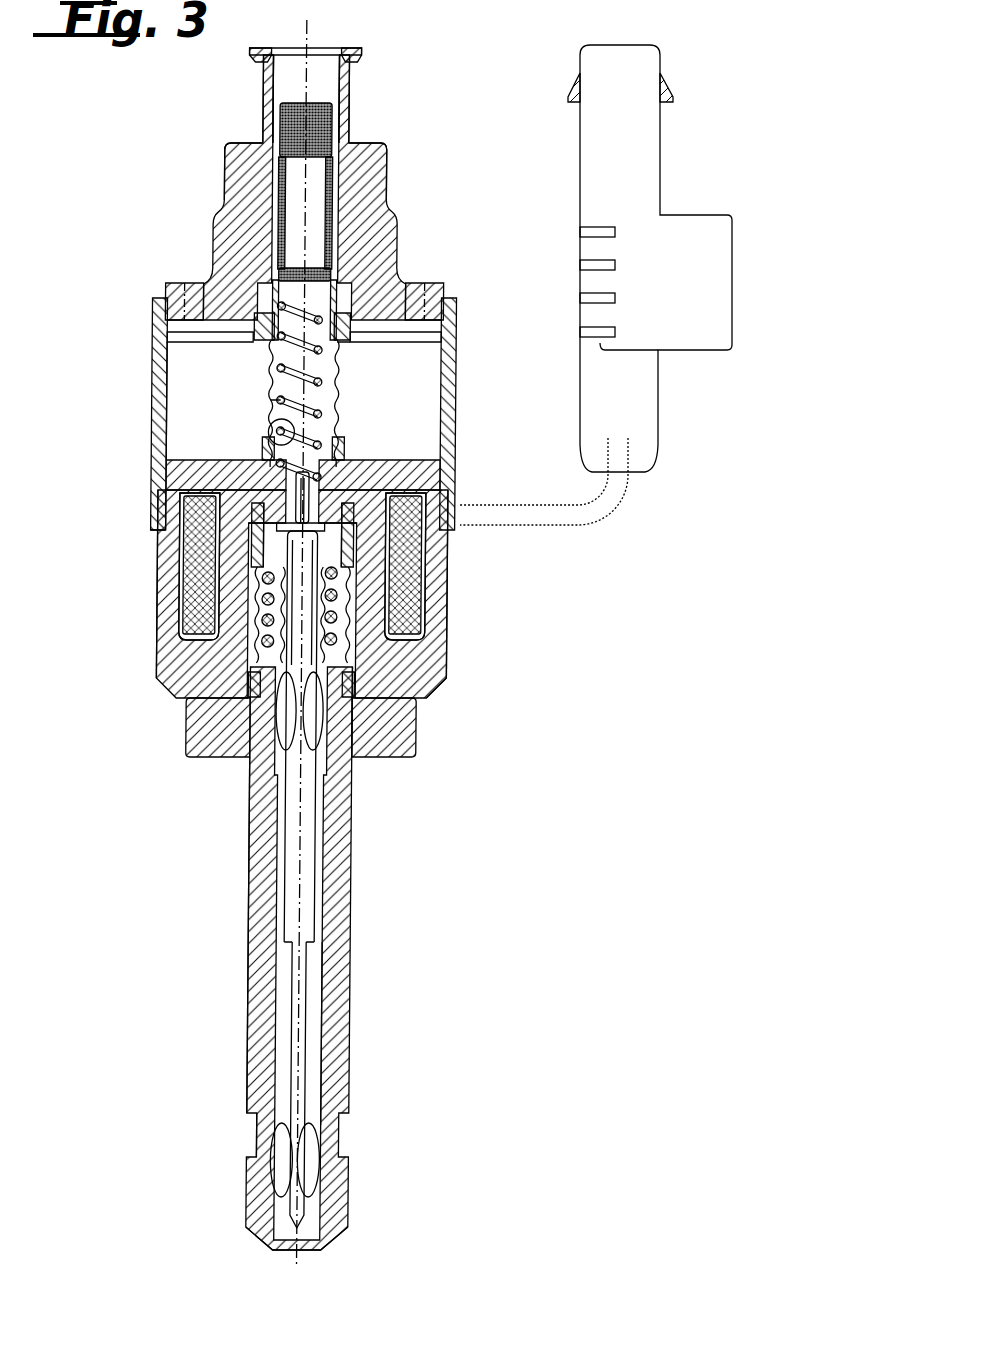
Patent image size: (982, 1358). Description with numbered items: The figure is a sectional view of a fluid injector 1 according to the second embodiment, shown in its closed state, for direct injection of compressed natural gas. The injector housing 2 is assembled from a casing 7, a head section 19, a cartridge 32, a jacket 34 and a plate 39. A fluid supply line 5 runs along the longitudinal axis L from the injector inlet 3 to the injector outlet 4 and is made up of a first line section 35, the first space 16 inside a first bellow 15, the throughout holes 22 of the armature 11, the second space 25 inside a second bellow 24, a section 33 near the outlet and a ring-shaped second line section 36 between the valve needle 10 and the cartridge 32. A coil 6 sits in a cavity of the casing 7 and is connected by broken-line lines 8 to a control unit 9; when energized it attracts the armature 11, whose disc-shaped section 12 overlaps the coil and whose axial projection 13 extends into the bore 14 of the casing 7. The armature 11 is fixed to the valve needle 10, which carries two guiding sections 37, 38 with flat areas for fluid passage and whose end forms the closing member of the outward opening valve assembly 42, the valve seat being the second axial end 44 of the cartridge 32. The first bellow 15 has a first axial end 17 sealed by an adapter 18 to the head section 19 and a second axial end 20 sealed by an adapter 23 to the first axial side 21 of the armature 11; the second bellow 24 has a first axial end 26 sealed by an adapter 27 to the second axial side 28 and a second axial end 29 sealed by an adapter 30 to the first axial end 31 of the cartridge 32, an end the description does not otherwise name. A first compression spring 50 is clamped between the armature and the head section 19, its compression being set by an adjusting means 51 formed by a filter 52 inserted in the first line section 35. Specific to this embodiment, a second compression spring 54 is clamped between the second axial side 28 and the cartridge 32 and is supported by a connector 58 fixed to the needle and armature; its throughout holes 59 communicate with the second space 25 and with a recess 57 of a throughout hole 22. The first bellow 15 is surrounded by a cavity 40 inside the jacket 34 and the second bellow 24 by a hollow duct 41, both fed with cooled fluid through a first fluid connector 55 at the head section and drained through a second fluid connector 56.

The fluid injector 1 is at (112, 162).
The injector housing 2 is at (352, 252).
The injector inlet 3 is at (351, 55).
The injector outlet 4 is at (332, 1235).
The fluid supply line 5 is at (366, 333).
The coil 6 is at (450, 665).
The casing 7 is at (443, 623).
The lines 8 is at (578, 510).
The control unit 9 is at (640, 400).
The valve needle 10 is at (312, 820).
The armature 11 is at (449, 478).
The disc-shaped section 12 is at (189, 472).
The axial projection 13 is at (182, 518).
The bore 14 is at (410, 590).
The first bellow 15 is at (343, 377).
The first space 16 is at (273, 378).
The first axial end 17 is at (443, 355).
The adapter 18 is at (265, 365).
The head section 19 is at (362, 188).
The second axial end 20 is at (278, 408).
The first axial side 21 is at (267, 455).
The throughout holes 22 is at (288, 468).
The adapter 23 is at (344, 428).
The second bellow 24 is at (268, 675).
The second space 25 is at (263, 655).
The first axial end 26 is at (259, 508).
The adapter 27 is at (449, 487).
The second axial side 28 is at (169, 492).
The second axial end 29 is at (350, 915).
The adapter 30 is at (418, 742).
The flow passage 31 is at (274, 722).
The cartridge 32 is at (267, 1075).
The section 33 is at (324, 1075).
The jacket 34 is at (161, 418).
The first line section 35 is at (332, 85).
The second line section 36 is at (288, 985).
The guiding section 37 is at (259, 800).
The guiding section 38 is at (301, 1140).
The plate 39 is at (218, 742).
The cavity 40 is at (287, 401).
The hollow duct 41 is at (195, 615).
The valve assembly 42 is at (350, 1247).
The second axial end 44 is at (256, 1228).
The first compression spring 50 is at (324, 315).
The adjusting means 51 is at (274, 185).
The filter 52 is at (274, 185).
The second compression spring 54 is at (256, 698).
The first fluid connector 55 is at (180, 292).
The second fluid connector 56 is at (434, 292).
The recess 57 is at (326, 485).
The connector 58 is at (272, 538).
The throughout holes 59 is at (273, 560).
The longitudinal axis L is at (336, 1044).